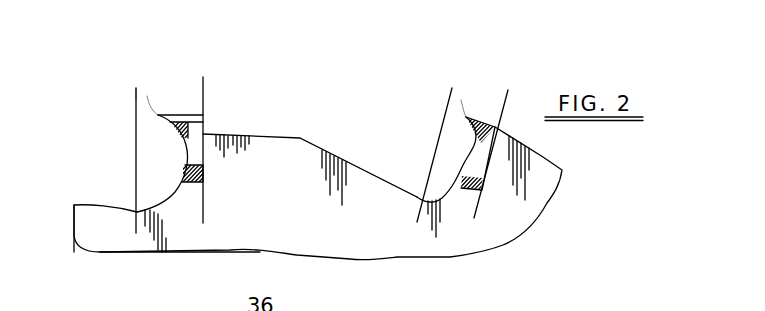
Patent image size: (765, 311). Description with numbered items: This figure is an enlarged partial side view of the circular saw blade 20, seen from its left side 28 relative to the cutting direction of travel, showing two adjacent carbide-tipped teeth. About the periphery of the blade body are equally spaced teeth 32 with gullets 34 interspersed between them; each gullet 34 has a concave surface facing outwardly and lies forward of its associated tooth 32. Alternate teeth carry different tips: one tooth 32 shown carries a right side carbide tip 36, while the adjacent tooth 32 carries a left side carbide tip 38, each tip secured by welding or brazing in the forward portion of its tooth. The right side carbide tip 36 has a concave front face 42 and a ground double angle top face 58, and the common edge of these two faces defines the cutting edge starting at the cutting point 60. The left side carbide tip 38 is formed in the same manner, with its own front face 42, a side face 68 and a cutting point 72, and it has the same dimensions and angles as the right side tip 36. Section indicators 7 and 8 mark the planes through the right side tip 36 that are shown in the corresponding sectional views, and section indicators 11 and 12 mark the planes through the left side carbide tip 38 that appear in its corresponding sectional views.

The circular saw blade 20 is at (118, 86).
The left side 28 is at (185, 232).
The teeth 32 is at (258, 137).
The gullets 34 is at (383, 180).
The right side carbide tip 36 is at (208, 165).
The left side carbide tip 38 is at (483, 109).
The front face 42 is at (184, 158).
The double angle top face 58 is at (185, 117).
The cutting point 60 is at (158, 115).
The side face 68 is at (483, 140).
The cutting point 72 is at (466, 117).
The section line 7- 7 is at (128, 100).
The section line 8- 8 is at (211, 92).
The section line 11- 11 is at (441, 100).
The section line 12- 12 is at (512, 114).